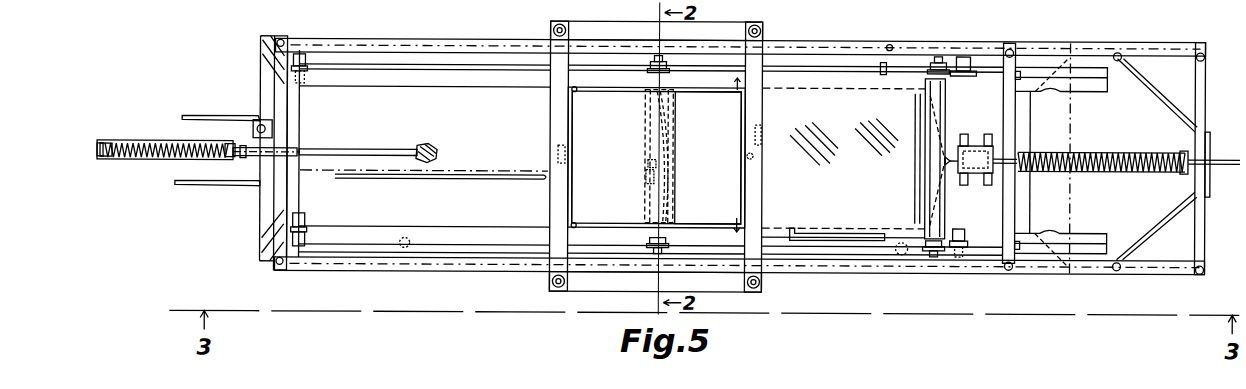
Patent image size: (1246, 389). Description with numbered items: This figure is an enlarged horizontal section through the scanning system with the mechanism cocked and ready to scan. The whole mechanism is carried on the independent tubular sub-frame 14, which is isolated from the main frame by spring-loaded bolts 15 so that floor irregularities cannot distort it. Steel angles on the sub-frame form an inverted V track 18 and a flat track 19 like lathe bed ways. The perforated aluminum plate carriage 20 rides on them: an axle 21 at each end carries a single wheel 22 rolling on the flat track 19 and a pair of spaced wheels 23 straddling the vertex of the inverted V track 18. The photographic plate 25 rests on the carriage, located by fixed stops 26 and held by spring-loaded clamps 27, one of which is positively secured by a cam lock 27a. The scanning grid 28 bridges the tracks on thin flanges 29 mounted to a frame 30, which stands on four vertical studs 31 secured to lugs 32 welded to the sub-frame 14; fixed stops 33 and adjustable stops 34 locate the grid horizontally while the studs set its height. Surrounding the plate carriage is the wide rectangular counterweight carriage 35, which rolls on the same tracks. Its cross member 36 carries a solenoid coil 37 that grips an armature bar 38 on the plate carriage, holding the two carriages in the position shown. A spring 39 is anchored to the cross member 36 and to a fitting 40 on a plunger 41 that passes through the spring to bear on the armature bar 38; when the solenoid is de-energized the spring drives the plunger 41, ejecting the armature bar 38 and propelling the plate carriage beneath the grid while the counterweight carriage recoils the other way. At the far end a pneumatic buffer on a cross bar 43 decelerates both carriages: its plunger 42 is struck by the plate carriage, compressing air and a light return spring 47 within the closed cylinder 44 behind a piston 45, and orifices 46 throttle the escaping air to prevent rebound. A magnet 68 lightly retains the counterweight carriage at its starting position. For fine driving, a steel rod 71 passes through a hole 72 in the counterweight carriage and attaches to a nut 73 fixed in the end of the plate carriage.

The sub-frame 14 is at (1062, 208).
The spring-loaded bolts 15 is at (408, 250).
The inverted V track 18 is at (882, 255).
The flat track 19 is at (896, 67).
The plate carriage 20 is at (945, 128).
The axle 21 is at (672, 205).
The single wheel 22 is at (668, 68).
The spaced wheels 23 is at (664, 246).
The photographic plate 25 is at (844, 142).
The fixed stops 26 is at (690, 92).
The spring-loaded clamps 27 is at (672, 160).
The cam lock 27a is at (648, 164).
The scanning grid 28 is at (599, 157).
The thin flanges 29 is at (620, 90).
The frame 30 is at (550, 118).
The vertical studs 31 is at (550, 29).
The lugs 32 is at (698, 33).
The fixed stops 33 is at (575, 91).
The adjustable stops 34 is at (737, 92).
The counterweight carriage 35 is at (1137, 272).
The cross member 36 is at (1005, 208).
The solenoid coil 37 is at (975, 172).
The armature bar 38 is at (950, 166).
The spring 39 is at (1108, 162).
The fitting 40 is at (1190, 152).
The plunger 41 is at (1110, 155).
The plunger 42 is at (430, 147).
The cross bar 43 is at (276, 114).
The closed cylinder 44 is at (160, 144).
The piston 45 is at (230, 150).
The orifices 46 is at (106, 143).
The return spring 47 is at (130, 145).
The magnet 68 is at (252, 130).
The steel rod 71 is at (418, 180).
The hole 72 is at (282, 180).
The nut 73 is at (645, 182).